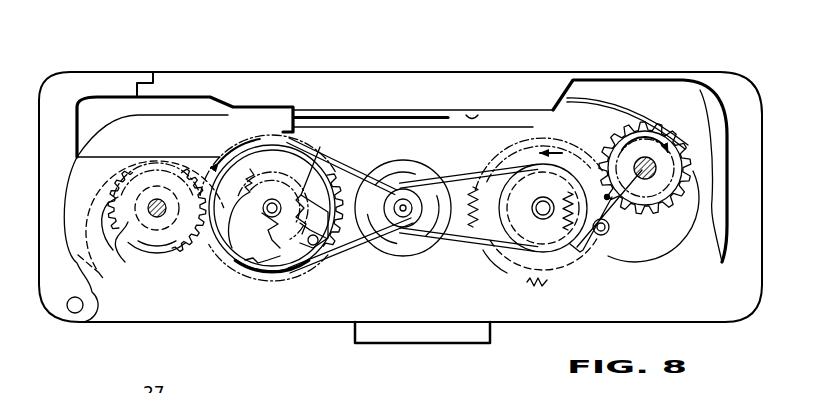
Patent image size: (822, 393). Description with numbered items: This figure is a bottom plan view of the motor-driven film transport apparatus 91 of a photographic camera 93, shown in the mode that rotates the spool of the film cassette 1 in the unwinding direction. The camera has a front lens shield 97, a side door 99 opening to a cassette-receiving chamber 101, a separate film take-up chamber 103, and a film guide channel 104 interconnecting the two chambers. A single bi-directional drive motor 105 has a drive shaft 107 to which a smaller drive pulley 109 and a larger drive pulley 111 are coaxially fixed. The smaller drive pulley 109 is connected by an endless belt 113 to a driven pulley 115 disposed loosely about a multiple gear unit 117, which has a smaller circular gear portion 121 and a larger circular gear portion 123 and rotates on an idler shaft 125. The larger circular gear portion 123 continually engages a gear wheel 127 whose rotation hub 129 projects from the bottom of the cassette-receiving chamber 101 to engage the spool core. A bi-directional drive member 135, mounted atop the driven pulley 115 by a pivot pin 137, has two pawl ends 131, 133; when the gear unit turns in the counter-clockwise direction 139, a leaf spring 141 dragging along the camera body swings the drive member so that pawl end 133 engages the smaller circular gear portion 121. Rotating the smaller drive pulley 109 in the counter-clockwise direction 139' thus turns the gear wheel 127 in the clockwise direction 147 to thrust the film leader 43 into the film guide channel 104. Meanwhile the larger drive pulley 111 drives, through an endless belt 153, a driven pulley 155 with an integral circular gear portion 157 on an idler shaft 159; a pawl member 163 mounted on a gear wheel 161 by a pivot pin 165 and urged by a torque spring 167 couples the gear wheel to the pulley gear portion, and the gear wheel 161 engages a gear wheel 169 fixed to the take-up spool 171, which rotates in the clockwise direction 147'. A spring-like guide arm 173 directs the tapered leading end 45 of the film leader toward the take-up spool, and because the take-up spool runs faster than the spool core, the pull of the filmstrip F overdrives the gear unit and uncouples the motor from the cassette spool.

The film cassette 1 is at (137, 117).
The film leader 43 is at (372, 115).
The tapered leading end 45 is at (440, 166).
The motor-driven film transport apparatus 91 is at (459, 117).
The photographic camera 93 is at (186, 68).
The front lens shield 97 is at (368, 333).
The side door 99 is at (48, 123).
The cassette-receiving chamber 101 is at (178, 302).
The film take-up chamber 103 is at (713, 235).
The film guide channel 104 is at (478, 117).
The bi-directional drive motor 105 is at (423, 260).
The drive shaft 107 is at (397, 250).
The smaller drive pulley 109 is at (397, 180).
The larger drive pulley 111 is at (408, 248).
The endless belt 113 is at (357, 177).
The driven pulley 115 is at (221, 153).
The multiple gear unit 117 is at (228, 134).
The smaller circular gear portion 121 is at (220, 268).
The larger circular gear portion 123 is at (204, 250).
The idler shaft 125 is at (275, 212).
The gear wheel 127 is at (98, 229).
The rotation hub 129 is at (153, 230).
The pawl end 131 is at (263, 265).
The pawl end 133 is at (325, 182).
The bi-directional drive member 135 is at (305, 270).
The pivot pin 137 is at (313, 262).
The counter-clockwise direction 139 is at (267, 196).
The counter-clockwise direction 139' is at (451, 251).
The leaf spring 141 is at (325, 265).
The clockwise direction 147 is at (116, 251).
The clockwise direction 147' is at (645, 185).
The endless belt 153 is at (465, 174).
The driven pulley 155 is at (530, 253).
The circular gear portion 157 is at (483, 253).
The idler shaft 159 is at (547, 203).
The gear wheel 161 is at (620, 218).
The pawl member 163 is at (577, 240).
The pivot pin 165 is at (617, 240).
The torque spring 167 is at (593, 240).
The gear wheel 169 is at (687, 147).
The take-up spool 171 is at (683, 247).
The spring-like guide arm 173 is at (637, 113).
The filmstrip F is at (323, 112).